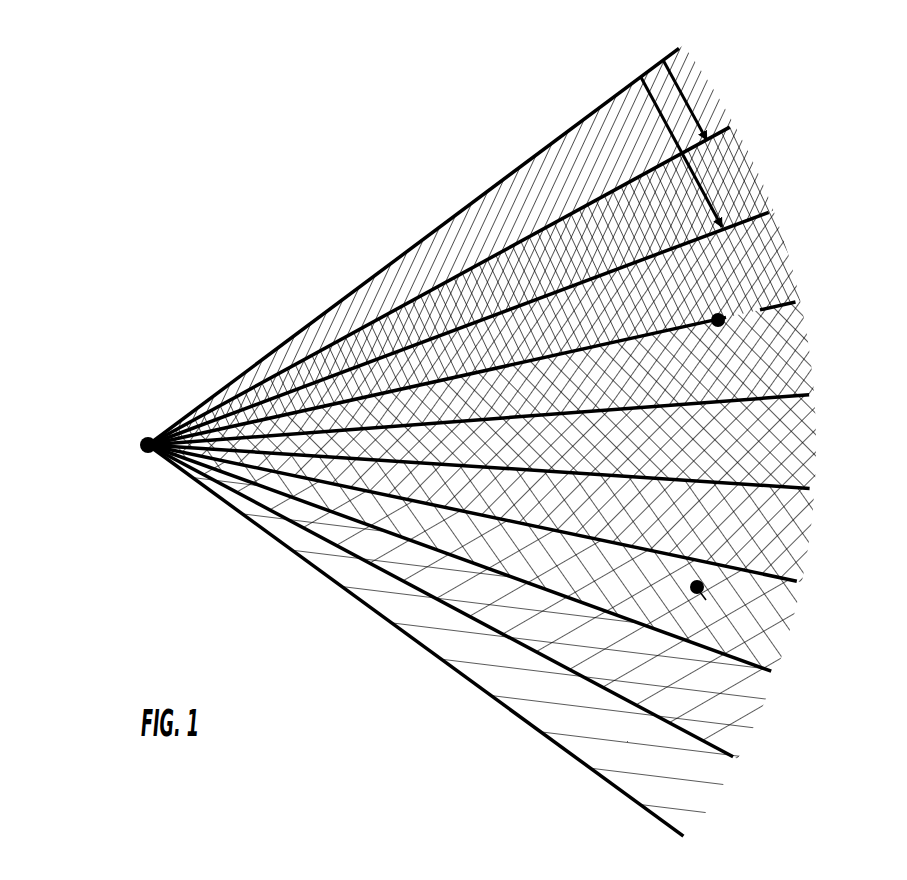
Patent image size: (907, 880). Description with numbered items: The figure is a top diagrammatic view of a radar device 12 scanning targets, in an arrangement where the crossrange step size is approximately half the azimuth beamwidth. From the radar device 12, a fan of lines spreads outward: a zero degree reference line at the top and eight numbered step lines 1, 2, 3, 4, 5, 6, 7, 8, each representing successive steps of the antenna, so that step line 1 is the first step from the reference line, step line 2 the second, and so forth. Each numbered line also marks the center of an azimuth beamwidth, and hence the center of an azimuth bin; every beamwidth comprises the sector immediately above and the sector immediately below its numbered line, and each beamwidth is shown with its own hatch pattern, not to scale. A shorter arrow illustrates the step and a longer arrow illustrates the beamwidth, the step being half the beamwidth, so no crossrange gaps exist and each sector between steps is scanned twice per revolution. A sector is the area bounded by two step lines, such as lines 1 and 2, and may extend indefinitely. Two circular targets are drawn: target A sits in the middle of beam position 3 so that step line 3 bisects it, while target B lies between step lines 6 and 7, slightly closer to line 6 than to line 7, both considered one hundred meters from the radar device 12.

The radar device 12 is at (92, 495).
The step line 1 is at (520, 231).
The step line 2 is at (474, 285).
The step line 3 is at (485, 328).
The step line 4 is at (492, 395).
The step line 5 is at (492, 488).
The step line 6 is at (485, 559).
The step line 7 is at (475, 602).
The step line 8 is at (462, 642).